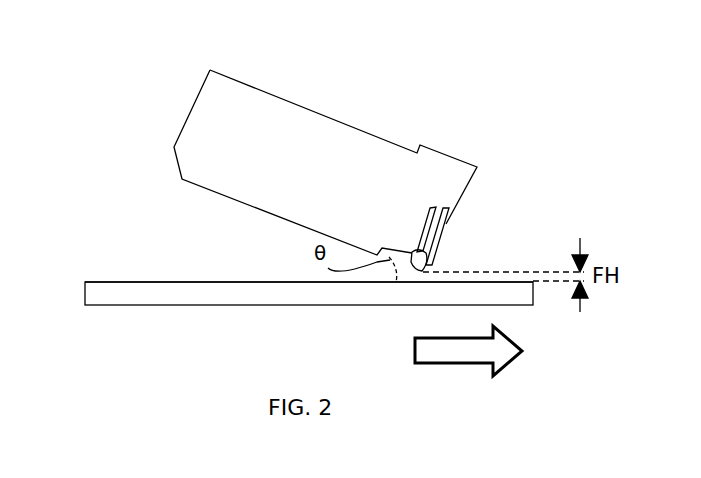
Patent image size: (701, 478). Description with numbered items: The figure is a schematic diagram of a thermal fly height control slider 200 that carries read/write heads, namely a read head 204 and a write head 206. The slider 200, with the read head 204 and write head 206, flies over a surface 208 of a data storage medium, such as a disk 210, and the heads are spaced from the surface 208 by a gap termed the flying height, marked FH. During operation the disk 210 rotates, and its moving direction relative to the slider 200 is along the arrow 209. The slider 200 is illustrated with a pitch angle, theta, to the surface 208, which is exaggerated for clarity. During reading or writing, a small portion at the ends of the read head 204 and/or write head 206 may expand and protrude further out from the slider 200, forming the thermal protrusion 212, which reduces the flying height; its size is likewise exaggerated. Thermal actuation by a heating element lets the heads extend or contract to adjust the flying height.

The thermal fly height control slider 200 is at (307, 93).
The read head 204 is at (417, 245).
The write head 206 is at (443, 224).
The surface 208 is at (190, 281).
The arrow 209 is at (425, 357).
The data storage medium (disk) 210 is at (110, 288).
The thermal protrusion 212 is at (427, 261).